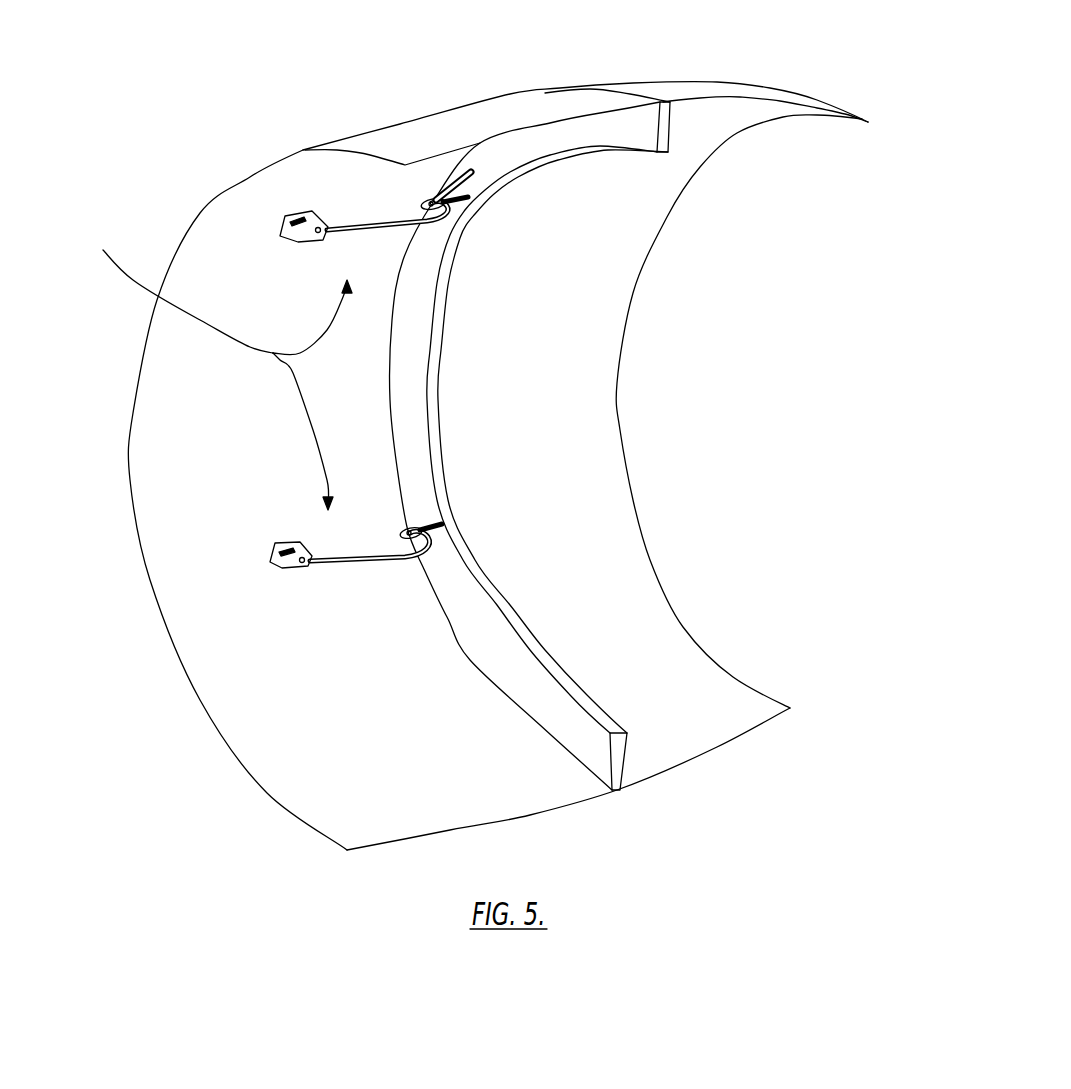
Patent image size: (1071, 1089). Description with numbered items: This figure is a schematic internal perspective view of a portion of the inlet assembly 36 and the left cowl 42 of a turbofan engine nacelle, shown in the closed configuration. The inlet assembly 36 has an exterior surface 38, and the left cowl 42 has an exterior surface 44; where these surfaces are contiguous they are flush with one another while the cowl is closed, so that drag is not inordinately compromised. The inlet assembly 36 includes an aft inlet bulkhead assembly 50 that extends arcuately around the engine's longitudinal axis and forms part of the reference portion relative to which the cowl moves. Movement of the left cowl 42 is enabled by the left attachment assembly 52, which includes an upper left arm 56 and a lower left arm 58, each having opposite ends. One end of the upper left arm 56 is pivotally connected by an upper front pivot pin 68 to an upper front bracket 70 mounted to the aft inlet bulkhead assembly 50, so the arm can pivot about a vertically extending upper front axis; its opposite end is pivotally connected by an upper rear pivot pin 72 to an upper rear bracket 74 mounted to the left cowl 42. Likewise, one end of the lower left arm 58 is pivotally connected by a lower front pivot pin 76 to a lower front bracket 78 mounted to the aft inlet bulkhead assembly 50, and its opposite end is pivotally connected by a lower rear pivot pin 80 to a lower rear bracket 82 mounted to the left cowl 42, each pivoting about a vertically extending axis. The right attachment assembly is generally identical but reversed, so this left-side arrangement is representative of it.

The inlet assembly 36 is at (616, 382).
The exterior surface 38 is at (718, 88).
The left cowl 42 is at (236, 452).
The exterior surface 44 is at (458, 120).
The aft inlet bulkhead assembly 50 is at (627, 753).
The left attachment assembly 52 is at (212, 366).
The upper left arm 56 is at (378, 222).
The lower left arm 58 is at (357, 560).
The upper front pivot pin 68 is at (433, 190).
The upper front bracket 70 is at (460, 190).
The upper rear pivot pin 72 is at (323, 227).
The upper rear bracket 74 is at (293, 240).
The lower front pivot pin 76 is at (412, 530).
The lower front bracket 78 is at (437, 531).
The lower rear pivot pin 80 is at (300, 550).
The lower rear bracket 82 is at (287, 570).